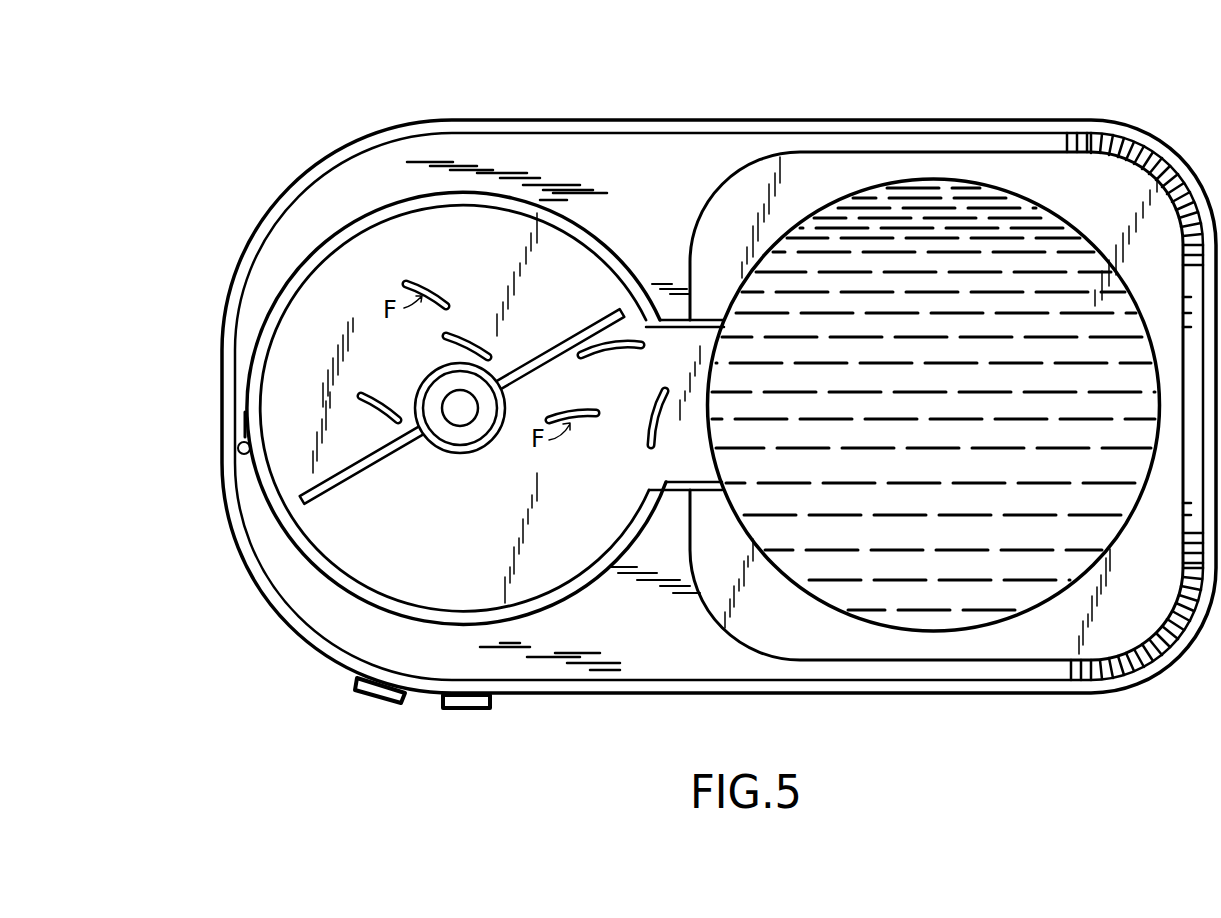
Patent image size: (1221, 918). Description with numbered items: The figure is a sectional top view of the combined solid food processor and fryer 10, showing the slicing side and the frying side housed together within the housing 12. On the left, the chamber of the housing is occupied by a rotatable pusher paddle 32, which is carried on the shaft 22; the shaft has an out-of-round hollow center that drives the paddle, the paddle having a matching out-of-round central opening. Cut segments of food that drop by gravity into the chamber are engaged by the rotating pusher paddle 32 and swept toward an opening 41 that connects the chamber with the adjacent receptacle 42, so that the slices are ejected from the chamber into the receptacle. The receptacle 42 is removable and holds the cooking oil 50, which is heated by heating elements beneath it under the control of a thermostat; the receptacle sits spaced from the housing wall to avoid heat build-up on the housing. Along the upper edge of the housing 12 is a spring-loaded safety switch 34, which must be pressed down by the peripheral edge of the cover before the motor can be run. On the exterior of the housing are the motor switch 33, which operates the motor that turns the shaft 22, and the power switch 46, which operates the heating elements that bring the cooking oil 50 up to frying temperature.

The solid food processor and fryer 10 is at (705, 66).
The housing 12 is at (220, 404).
The shaft 22 is at (476, 438).
The pusher paddle 32 is at (594, 322).
The motor switch 33 is at (473, 704).
The safety switch 34 is at (250, 443).
The opening 41 is at (683, 452).
The receptacle 42 is at (1062, 170).
The power switch 46 is at (375, 695).
The cooking oil 50 is at (1083, 530).